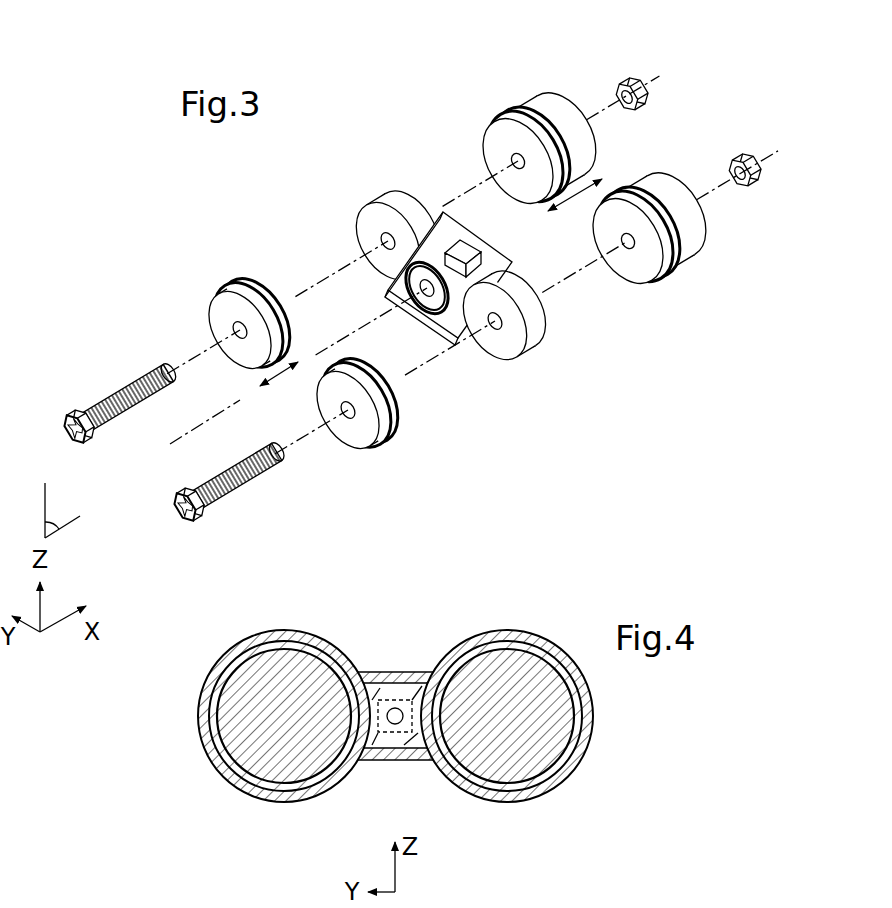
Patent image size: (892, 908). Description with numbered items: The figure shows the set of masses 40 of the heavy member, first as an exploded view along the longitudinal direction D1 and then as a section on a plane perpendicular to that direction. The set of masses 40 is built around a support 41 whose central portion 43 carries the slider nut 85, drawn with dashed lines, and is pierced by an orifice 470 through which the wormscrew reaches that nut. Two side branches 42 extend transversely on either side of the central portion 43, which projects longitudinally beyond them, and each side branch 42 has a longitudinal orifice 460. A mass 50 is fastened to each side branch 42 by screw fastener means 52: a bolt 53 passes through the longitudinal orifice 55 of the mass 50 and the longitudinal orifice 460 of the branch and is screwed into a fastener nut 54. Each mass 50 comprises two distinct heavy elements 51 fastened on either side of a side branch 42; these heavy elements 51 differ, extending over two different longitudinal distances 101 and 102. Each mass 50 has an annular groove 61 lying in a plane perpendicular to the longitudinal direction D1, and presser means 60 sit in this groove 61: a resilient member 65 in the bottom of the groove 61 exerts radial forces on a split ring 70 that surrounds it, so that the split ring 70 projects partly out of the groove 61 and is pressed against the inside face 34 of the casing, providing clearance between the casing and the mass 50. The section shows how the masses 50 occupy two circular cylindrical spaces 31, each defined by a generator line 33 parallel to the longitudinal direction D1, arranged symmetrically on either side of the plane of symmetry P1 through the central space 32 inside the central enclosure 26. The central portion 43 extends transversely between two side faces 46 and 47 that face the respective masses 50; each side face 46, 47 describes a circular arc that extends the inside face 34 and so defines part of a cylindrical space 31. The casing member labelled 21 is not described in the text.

In FIG. 4, the frame 21 is at (615, 903).
In FIG. 4, the central enclosure 26 is at (395, 714).
In FIG. 4, the cylindrical space 31 is at (316, 632).
In FIG. 4, the central space 32 is at (393, 762).
In FIG. 4, the generator line 33 is at (199, 708).
In FIG. 4, the inside face 34 is at (215, 659).
In FIG. 3, the set of masses 40 is at (585, 312).
In FIG. 3, the support 41 is at (501, 323).
In FIG. 4, the support 41 is at (418, 676).
In FIG. 3, the side branch 42 is at (363, 256).
In FIG. 3, the central portion 43 is at (453, 346).
In FIG. 3, the side face 46 is at (379, 317).
In FIG. 4, the side face 46 is at (372, 748).
In FIG. 3, the side face 47 is at (405, 196).
In FIG. 4, the side face 47 is at (410, 750).
In FIG. 3, the mass 50 is at (454, 282).
In FIG. 4, the mass 50 is at (394, 728).
In FIG. 3, the heavy element 51 is at (240, 330).
In FIG. 4, the heavy element 51 is at (287, 760).
In FIG. 3, the screw fastener means 52 is at (419, 276).
In FIG. 3, the bolt 53 is at (175, 440).
In FIG. 3, the fastener nut 54 is at (688, 132).
In FIG. 3, the longitudinal orifice 55 is at (240, 330).
In FIG. 3, the presser means 60 is at (252, 322).
In FIG. 3, the groove 61 is at (458, 282).
In FIG. 4, the groove 61 is at (394, 728).
In FIG. 4, the resilient member 65 is at (233, 767).
In FIG. 3, the split ring 70 is at (252, 322).
In FIG. 4, the split ring 70 is at (255, 790).
In FIG. 3, the slider nut 85 is at (472, 250).
In FIG. 4, the slider nut 85 is at (398, 702).
In FIG. 3, the distance 101 is at (285, 396).
In FIG. 3, the distance 102 is at (580, 200).
In FIG. 3, the longitudinal orifice 460 is at (388, 241).
In FIG. 3, the orifice 470 is at (402, 283).
In FIG. 3, the longitudinal direction D1 is at (190, 432).
In FIG. 3, the plane of symmetry P1 is at (52, 532).